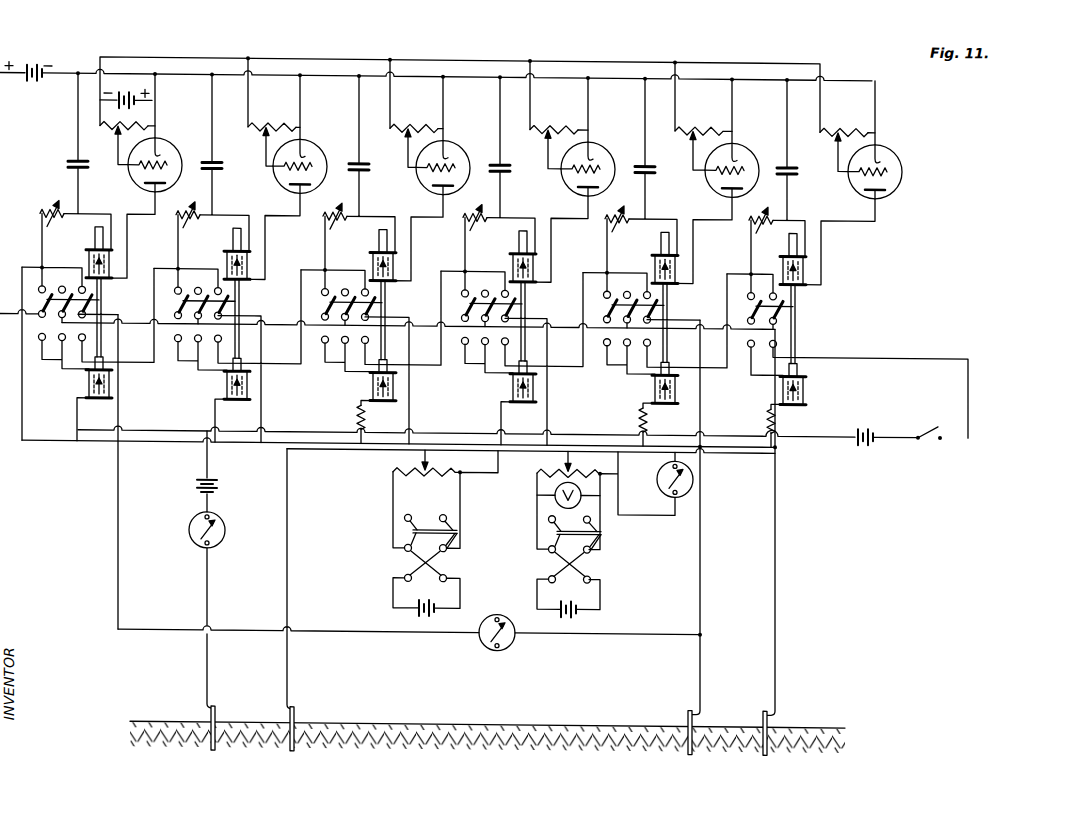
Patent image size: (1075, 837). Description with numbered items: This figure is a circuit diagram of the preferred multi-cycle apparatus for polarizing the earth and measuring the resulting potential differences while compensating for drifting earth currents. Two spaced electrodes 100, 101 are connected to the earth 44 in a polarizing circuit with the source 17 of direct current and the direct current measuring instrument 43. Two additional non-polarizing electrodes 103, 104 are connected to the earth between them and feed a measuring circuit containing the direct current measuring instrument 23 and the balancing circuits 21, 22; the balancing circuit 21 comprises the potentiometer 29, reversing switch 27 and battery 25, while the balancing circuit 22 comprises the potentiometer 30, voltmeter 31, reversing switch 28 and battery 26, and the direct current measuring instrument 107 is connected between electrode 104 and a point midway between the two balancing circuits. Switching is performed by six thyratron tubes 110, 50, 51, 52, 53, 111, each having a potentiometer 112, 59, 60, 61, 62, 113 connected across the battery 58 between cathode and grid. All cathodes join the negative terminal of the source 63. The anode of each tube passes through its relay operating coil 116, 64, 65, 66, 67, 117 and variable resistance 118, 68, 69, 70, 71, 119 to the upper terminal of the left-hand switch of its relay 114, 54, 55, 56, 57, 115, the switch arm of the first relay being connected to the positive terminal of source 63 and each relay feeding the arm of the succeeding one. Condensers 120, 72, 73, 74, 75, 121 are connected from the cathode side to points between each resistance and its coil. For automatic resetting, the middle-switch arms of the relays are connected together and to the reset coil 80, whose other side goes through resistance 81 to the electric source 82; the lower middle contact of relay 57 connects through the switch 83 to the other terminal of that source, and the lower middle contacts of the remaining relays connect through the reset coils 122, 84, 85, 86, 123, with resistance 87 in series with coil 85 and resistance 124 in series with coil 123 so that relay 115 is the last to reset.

The source of direct current 63 is at (44, 59).
The source of direct current 58 is at (150, 98).
The potentiometer 112 is at (142, 123).
The thyratron tube 110 is at (172, 145).
The condenser 120 is at (82, 168).
The condenser 72 is at (216, 169).
The potentiometer 59 is at (290, 123).
The thyratron tube 50 is at (322, 149).
The condenser 73 is at (363, 169).
The potentiometer 60 is at (416, 122).
The thyratron tube 51 is at (464, 146).
The condenser 74 is at (505, 168).
The potentiometer 61 is at (560, 121).
The thyratron tube 52 is at (609, 144).
The condenser 75 is at (650, 168).
The potentiometer 62 is at (705, 120).
The thyratron tube 53 is at (757, 133).
The condenser 121 is at (792, 168).
The potentiometer 113 is at (868, 122).
The thyratron tube 111 is at (902, 170).
The variable resistance 118 is at (52, 220).
The relay operating coil 116 is at (110, 265).
The relay 114 is at (112, 293).
The relay reset coil 122 is at (110, 386).
The variable resistance 68 is at (190, 220).
The operating coil 64 is at (248, 264).
The three-pole double-throw relay 54 is at (262, 316).
The reset coil 84 is at (248, 388).
The variable resistance 69 is at (340, 219).
The operating coil 65 is at (395, 263).
The three-pole double-throw relay 55 is at (392, 294).
The reset coil 85 is at (395, 388).
The resistance 87 is at (367, 420).
The variable resistance 70 is at (482, 219).
The operating coil 66 is at (535, 262).
The three-pole double-throw relay 56 is at (542, 293).
The reset coil 86 is at (534, 388).
The variable resistance 71 is at (624, 219).
The operating coil 67 is at (677, 262).
The three-pole double-throw relay 57 is at (687, 293).
The reset coil 80 is at (677, 384).
The resistance 81 is at (649, 418).
The variable resistance 119 is at (754, 219).
The relay operating coil 117 is at (806, 262).
The relay 115 is at (807, 308).
The relay reset coil 123 is at (806, 383).
The resistance 124 is at (777, 417).
The electric source 82 is at (880, 426).
The switch 83 is at (928, 434).
The source of direct current 17 is at (218, 488).
The direct current measuring instrument 43 is at (226, 530).
The potentiometer 29 is at (455, 475).
The balancing circuit 21 is at (470, 520).
The reversing switch 27 is at (452, 546).
The battery 25 is at (435, 608).
The potentiometer 30 is at (602, 470).
The voltmeter 31 is at (582, 492).
The direct current measuring instrument 23 is at (693, 475).
The balancing circuit 22 is at (610, 531).
The reversing switch 28 is at (602, 545).
The battery 26 is at (578, 607).
The direct current measuring instrument 107 is at (513, 640).
The earth 44 is at (505, 718).
The electrode 100 is at (216, 708).
The electrode 103 is at (295, 708).
The electrode 104 is at (688, 712).
The electrode 101 is at (770, 706).